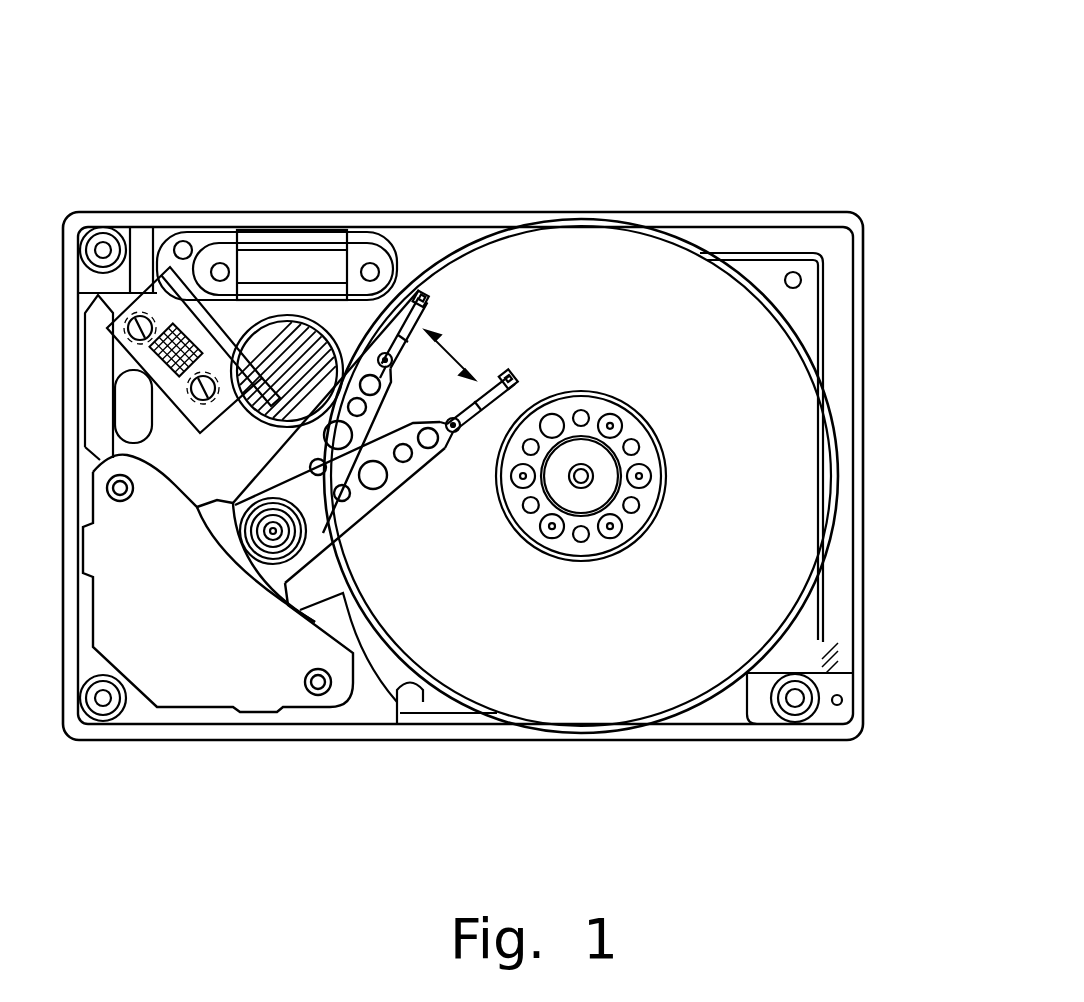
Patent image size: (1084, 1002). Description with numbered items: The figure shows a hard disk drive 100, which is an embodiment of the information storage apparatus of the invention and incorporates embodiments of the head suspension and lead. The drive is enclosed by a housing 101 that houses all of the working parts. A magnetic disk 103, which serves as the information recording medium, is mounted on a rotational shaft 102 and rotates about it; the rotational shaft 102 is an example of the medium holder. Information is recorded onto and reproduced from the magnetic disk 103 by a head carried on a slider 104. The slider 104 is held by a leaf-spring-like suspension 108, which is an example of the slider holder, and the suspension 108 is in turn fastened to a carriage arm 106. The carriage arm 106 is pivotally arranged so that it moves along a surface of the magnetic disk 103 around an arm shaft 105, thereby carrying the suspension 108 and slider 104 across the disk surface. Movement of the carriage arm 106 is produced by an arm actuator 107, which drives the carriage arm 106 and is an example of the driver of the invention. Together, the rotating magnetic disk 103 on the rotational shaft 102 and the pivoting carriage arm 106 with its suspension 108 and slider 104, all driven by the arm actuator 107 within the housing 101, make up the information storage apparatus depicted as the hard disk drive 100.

The hard disk drive 100 is at (803, 114).
The housing 101 is at (703, 212).
The rotational shaft 102 is at (597, 497).
The magnetic disk 103 is at (795, 430).
The slider 104 is at (509, 376).
The arm shaft 105 is at (273, 531).
The carriage arm 106 is at (353, 513).
The arm actuator 107 is at (166, 672).
The suspension 108 is at (490, 380).